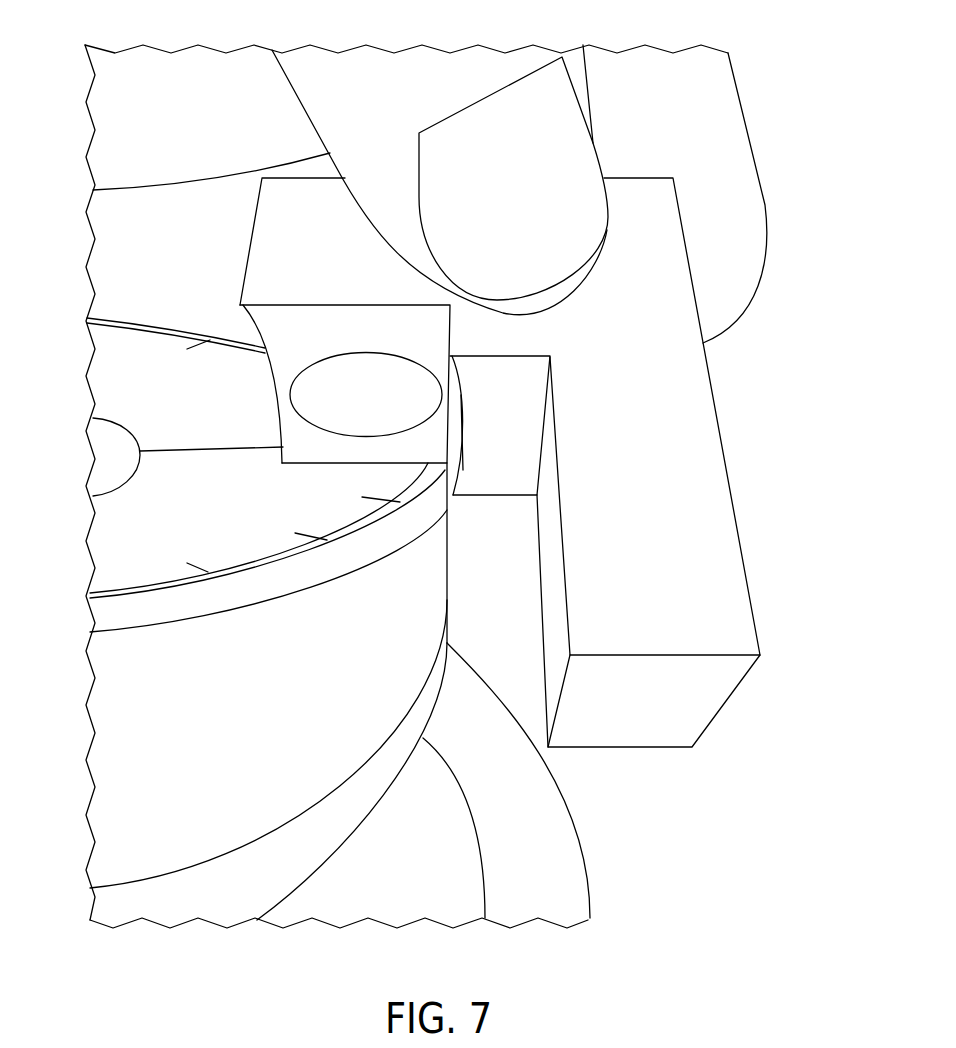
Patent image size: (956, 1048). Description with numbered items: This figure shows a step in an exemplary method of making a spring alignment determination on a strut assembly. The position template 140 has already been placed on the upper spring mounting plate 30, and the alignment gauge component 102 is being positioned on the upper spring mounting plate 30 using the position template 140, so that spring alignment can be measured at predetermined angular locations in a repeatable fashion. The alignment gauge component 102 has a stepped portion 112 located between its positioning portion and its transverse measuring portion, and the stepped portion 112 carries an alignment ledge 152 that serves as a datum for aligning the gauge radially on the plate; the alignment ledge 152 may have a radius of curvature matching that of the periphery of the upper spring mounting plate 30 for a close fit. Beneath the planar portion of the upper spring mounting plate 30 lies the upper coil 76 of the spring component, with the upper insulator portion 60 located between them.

The alignment gauge component 102 is at (748, 440).
The stepped portion 112 is at (517, 428).
The alignment ledge 152 is at (463, 398).
The position template 140 is at (105, 533).
The upper spring mounting plate 30 is at (100, 615).
The upper insulator portion 60 is at (106, 790).
The upper coil 76 is at (106, 903).